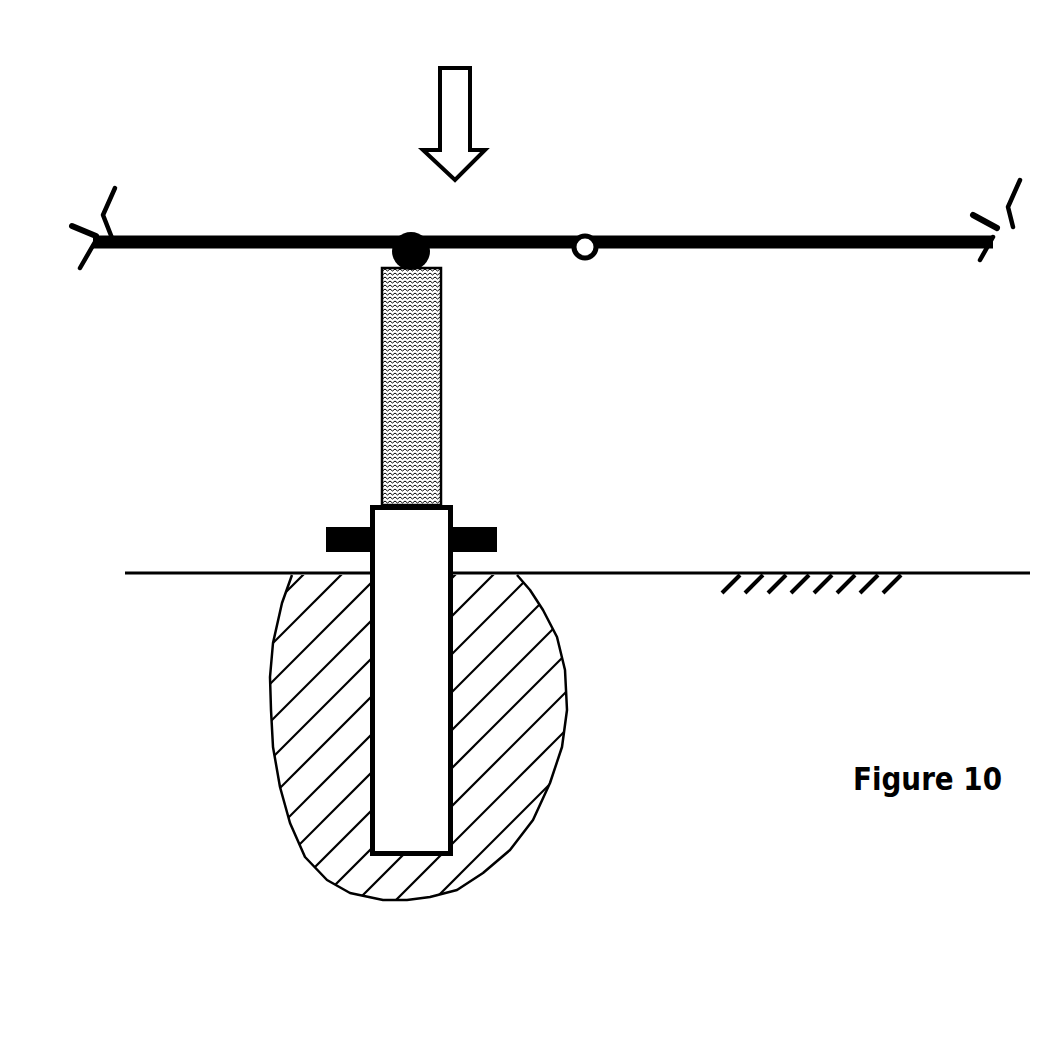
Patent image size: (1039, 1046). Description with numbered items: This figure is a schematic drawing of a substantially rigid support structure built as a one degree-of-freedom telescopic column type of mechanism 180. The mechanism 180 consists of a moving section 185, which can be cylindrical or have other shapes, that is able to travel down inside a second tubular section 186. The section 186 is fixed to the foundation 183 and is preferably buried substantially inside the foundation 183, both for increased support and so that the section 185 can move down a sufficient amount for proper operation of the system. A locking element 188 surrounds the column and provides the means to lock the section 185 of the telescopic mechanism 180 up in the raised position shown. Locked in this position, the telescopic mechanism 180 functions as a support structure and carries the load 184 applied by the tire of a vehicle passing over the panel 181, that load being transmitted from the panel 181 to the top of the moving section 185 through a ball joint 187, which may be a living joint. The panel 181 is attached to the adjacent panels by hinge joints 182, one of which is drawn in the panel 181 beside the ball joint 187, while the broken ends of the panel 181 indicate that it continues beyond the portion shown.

The telescopic column type of mechanism 180 is at (618, 405).
The panel 181 is at (270, 225).
The hinge joint 182 is at (585, 223).
The foundation 183 is at (882, 565).
The load 184 is at (454, 100).
The moving section 185 is at (358, 349).
The second tubular section 186 is at (416, 593).
The ball joint 187 is at (440, 260).
The locking element 188 is at (315, 528).